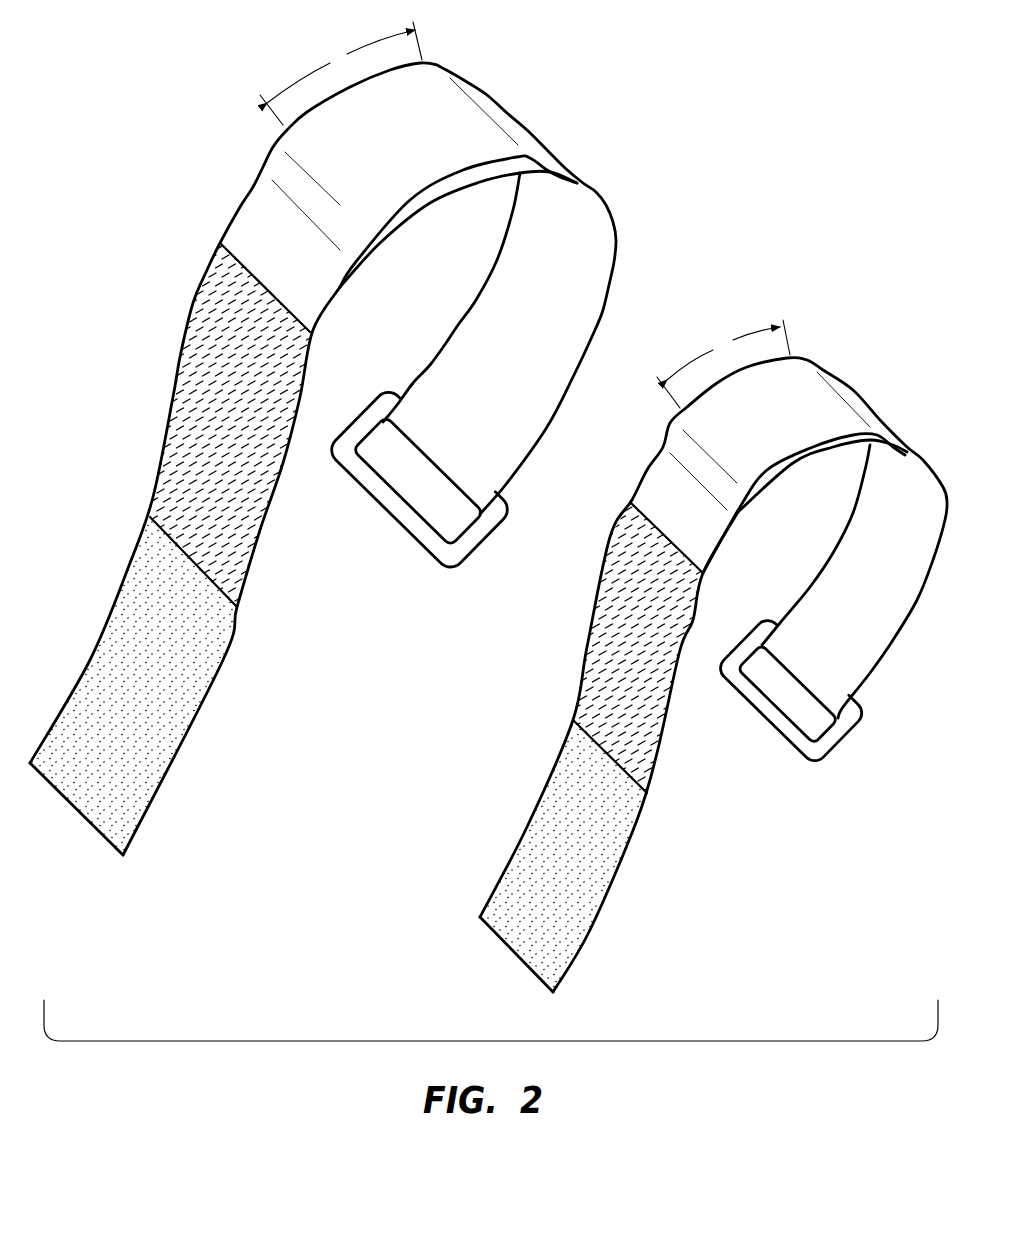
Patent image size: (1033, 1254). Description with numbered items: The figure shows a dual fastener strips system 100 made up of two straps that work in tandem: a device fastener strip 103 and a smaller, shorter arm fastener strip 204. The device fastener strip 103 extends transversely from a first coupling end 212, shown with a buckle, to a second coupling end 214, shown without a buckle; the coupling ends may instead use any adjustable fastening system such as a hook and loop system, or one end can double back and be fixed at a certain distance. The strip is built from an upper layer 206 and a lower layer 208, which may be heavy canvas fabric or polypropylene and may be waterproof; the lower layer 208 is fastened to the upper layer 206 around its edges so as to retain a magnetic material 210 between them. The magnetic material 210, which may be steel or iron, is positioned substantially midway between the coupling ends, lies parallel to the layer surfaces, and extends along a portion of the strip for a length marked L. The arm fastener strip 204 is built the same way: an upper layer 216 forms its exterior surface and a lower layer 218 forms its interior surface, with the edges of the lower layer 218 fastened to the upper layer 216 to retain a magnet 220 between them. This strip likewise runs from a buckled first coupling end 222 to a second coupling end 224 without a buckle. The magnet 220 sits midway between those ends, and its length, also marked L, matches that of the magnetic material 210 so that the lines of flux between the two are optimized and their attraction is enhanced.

The dual fastener strips system 100 is at (790, 126).
The device fastener strip 103 is at (557, 128).
The arm fastener strip 204 is at (905, 409).
The upper layer 206 is at (225, 225).
The lower layer 208 is at (340, 290).
The magnetic material 210 is at (412, 205).
The first coupling end 212 is at (387, 495).
The second coupling end 214 is at (113, 660).
The upper layer 216 is at (640, 483).
The lower layer 218 is at (727, 543).
The magnet 220 is at (793, 467).
The first coupling end 222 is at (778, 727).
The second coupling end 224 is at (538, 833).